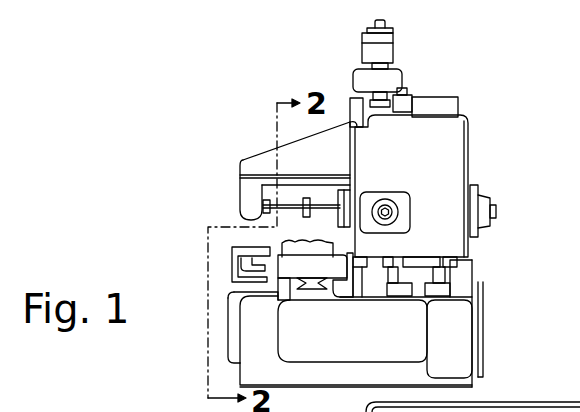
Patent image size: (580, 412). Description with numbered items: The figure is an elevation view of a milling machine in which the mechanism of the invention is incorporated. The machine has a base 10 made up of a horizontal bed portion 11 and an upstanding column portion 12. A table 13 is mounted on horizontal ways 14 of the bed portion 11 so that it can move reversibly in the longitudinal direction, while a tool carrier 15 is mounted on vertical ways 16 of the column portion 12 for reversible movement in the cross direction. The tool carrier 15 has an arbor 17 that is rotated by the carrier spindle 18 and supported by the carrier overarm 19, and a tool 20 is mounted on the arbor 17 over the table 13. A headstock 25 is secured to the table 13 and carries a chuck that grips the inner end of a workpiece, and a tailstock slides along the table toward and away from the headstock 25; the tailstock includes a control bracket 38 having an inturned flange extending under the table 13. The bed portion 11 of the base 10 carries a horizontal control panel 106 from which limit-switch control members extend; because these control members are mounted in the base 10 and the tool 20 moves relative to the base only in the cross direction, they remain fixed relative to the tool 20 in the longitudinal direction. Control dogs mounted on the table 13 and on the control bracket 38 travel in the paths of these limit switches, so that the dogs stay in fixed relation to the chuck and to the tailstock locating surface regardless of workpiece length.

The base 10 is at (340, 388).
The horizontal bed portion 11 is at (341, 284).
The upstanding column portion 12 is at (457, 99).
The table 13 is at (239, 270).
The horizontal ways 14 is at (295, 279).
The tool carrier 15 is at (468, 150).
The vertical ways 16 is at (362, 256).
The arbor 17 is at (328, 210).
The carrier spindle 18 is at (343, 199).
The carrier overarm 19 is at (262, 153).
The tool 20 is at (307, 197).
The headstock 25 is at (281, 243).
The control bracket 38 is at (232, 248).
The horizontal control panel 106 is at (243, 300).